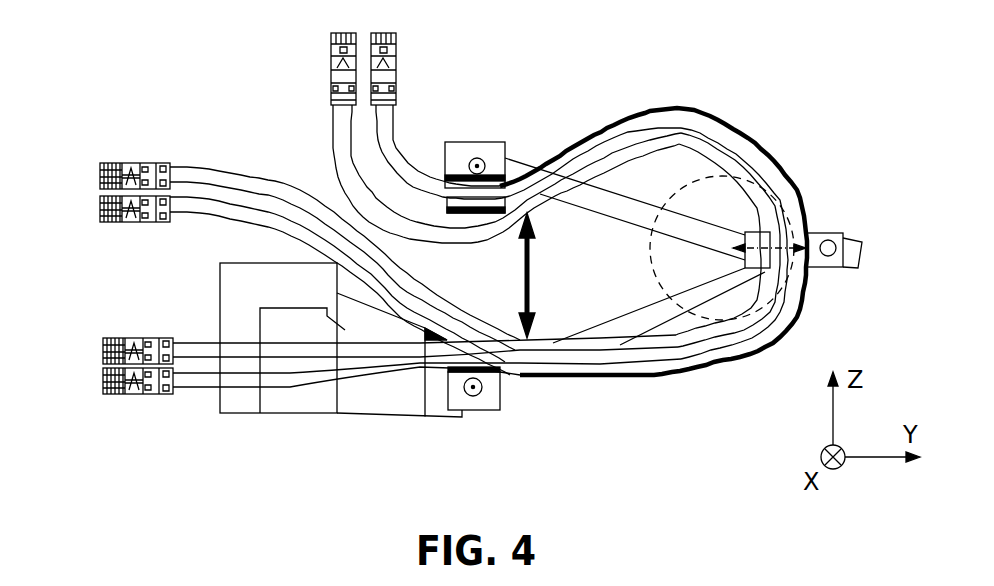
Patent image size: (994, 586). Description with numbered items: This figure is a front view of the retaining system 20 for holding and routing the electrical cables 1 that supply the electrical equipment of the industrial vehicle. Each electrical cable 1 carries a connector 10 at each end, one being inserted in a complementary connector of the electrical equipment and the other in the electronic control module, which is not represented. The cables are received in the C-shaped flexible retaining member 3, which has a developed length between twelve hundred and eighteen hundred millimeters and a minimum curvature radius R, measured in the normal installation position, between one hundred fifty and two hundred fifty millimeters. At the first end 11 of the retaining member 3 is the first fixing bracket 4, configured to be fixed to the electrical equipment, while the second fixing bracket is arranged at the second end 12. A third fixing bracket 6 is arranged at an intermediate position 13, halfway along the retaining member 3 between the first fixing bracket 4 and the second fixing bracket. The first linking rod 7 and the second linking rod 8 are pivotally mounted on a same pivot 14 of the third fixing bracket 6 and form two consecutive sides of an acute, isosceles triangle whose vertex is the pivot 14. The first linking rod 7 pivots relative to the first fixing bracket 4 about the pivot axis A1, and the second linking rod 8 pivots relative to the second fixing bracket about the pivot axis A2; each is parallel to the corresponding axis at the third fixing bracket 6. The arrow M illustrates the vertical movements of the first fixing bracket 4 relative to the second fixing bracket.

The retaining system 20 is at (494, 198).
The connector 10 is at (337, 62).
The second end 12 is at (462, 173).
The pivot axis A1 is at (478, 160).
The third fixing bracket 6 is at (493, 150).
The C-shaped flexible retaining member 3 is at (753, 137).
The electrical cables 1 is at (762, 162).
The pivot 14 is at (836, 243).
The intermediate position 13 is at (805, 268).
The second linking rod 8 is at (612, 200).
The first linking rod 7 is at (603, 330).
The first end 11 is at (483, 372).
The first fixing bracket 4 is at (488, 402).
The pivot axis A2 is at (473, 396).
The arrow M is at (522, 276).
The minimum curvature radius R is at (757, 250).